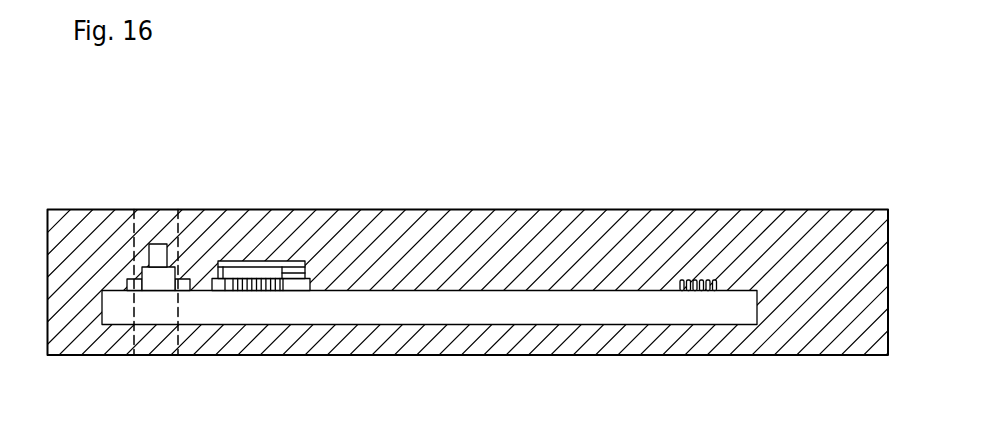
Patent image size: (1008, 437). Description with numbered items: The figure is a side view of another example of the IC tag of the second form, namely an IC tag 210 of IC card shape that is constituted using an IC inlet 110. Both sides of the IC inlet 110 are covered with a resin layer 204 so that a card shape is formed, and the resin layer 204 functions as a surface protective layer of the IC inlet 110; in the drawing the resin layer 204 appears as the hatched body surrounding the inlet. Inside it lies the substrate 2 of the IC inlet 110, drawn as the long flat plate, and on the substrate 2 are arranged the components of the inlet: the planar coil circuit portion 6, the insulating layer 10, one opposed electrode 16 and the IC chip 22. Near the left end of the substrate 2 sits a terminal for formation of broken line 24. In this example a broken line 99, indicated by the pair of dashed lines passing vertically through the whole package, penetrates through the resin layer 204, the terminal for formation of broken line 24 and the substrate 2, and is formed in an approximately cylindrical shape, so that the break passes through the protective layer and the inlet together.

The substrate 2 is at (523, 303).
The planar coil circuit portion 6 is at (680, 278).
The insulating layer 10 is at (245, 273).
The one opposed electrode 16 is at (157, 275).
The IC chip 22 is at (158, 253).
The terminal for formation of broken line 24 is at (123, 285).
The broken line 99 is at (182, 334).
The IC inlet 110 is at (406, 272).
The resin layer 204 is at (738, 227).
The IC tag 210 is at (542, 186).